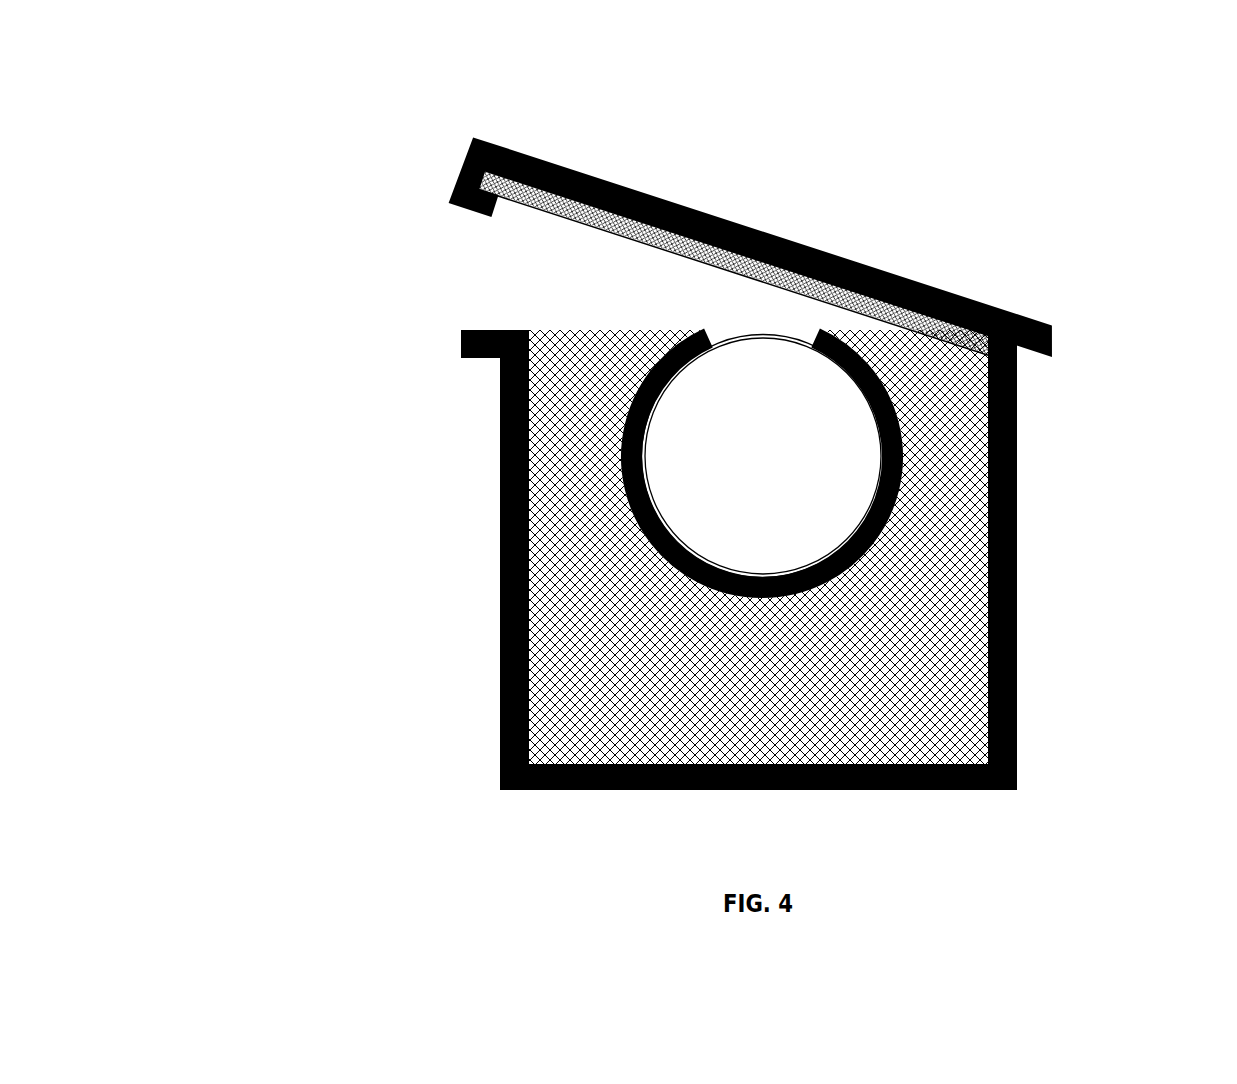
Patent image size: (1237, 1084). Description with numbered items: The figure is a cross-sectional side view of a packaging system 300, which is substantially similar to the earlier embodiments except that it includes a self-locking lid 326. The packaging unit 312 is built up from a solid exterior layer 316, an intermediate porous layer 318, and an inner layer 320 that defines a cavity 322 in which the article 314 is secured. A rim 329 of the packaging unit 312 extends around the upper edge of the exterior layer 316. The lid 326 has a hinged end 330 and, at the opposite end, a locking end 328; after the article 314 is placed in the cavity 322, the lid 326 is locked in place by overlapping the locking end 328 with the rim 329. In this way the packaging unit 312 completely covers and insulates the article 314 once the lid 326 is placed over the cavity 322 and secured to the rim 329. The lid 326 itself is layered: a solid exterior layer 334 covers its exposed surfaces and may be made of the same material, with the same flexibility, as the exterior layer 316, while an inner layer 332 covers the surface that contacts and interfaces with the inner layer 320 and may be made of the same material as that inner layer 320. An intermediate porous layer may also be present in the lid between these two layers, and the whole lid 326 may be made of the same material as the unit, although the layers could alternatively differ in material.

The packaging system 300 is at (701, 445).
The packaging unit 312 is at (725, 491).
The article 314 is at (772, 316).
The exterior layer 316 is at (500, 522).
The intermediate porous layer 318 is at (910, 592).
The inner layer 320 is at (900, 405).
The cavity 322 is at (706, 335).
The self-locking lid 326 is at (818, 250).
The locking end 328 is at (734, 273).
The rim 329 is at (460, 343).
The hinged end 330 is at (1024, 318).
The inner layer 332 is at (736, 263).
The solid exterior layer 334 is at (975, 298).